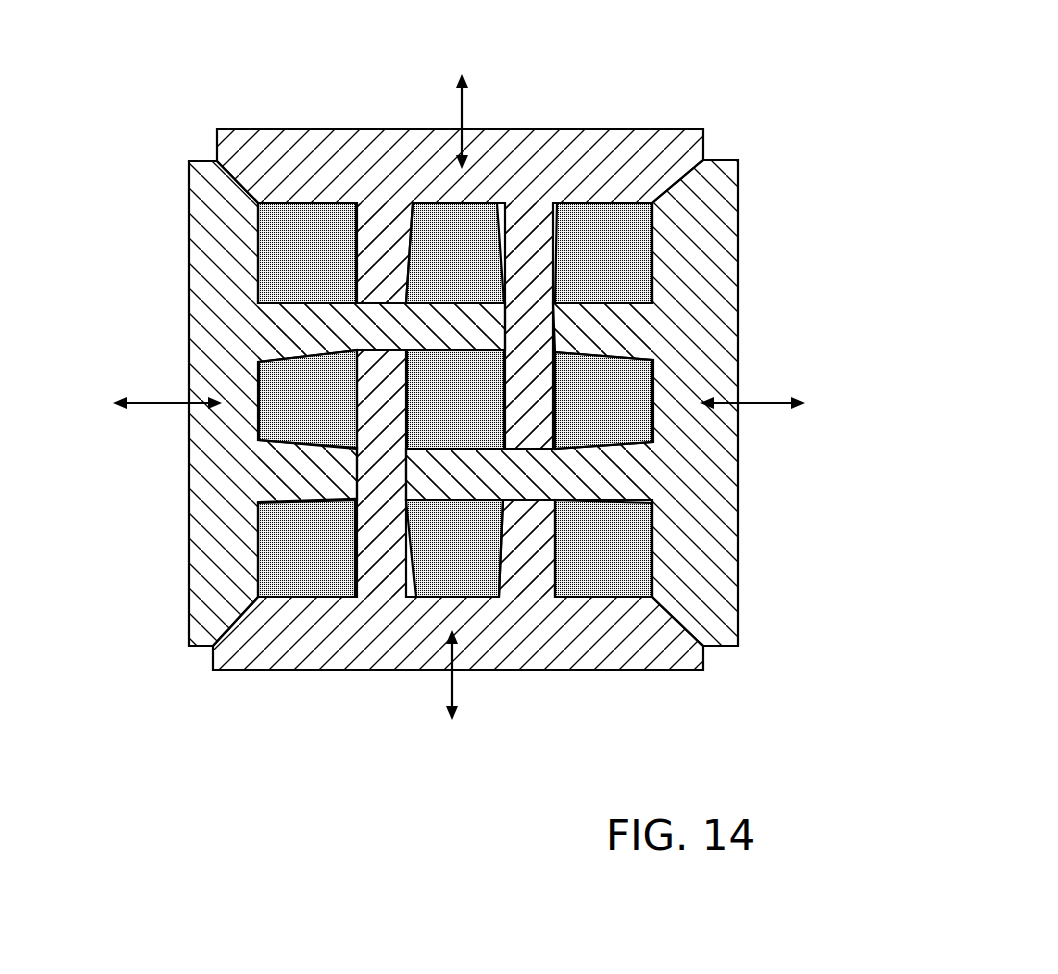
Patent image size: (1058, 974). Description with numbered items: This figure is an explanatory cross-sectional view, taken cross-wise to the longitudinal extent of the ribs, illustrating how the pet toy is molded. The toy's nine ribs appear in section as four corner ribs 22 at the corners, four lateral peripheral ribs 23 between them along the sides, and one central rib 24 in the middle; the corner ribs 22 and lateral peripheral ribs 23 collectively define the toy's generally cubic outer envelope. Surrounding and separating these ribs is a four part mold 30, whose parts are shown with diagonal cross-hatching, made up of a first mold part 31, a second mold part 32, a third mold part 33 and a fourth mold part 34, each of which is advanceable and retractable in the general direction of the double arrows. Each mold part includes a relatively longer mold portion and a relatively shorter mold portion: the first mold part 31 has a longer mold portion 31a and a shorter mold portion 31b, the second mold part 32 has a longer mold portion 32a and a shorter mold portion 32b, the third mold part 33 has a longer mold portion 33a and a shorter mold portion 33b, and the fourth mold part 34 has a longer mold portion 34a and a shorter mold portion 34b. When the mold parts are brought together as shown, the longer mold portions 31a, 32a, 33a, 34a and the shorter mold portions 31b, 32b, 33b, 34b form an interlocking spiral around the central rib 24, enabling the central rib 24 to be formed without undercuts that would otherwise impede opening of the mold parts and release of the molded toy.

The corner ribs 22 is at (307, 253).
The lateral peripheral ribs 23 is at (468, 232).
The central rib 24 is at (455, 370).
The four part mold 30 is at (171, 719).
The first mold part 31 is at (281, 354).
The longer mold portion of first mold part 31a is at (388, 330).
The shorter mold portion of first mold part 31b is at (350, 464).
The second mold part 32 is at (564, 286).
The longer mold portion of second mold part 32a is at (530, 410).
The shorter mold portion of second mold part 32b is at (380, 272).
The third mold part 33 is at (628, 447).
The longer mold portion of third mold part 33a is at (500, 475).
The shorter mold portion of third mold part 33b is at (613, 341).
The fourth mold part 34 is at (369, 558).
The longer mold portion of fourth mold part 34a is at (385, 417).
The shorter mold portion of fourth mold part 34b is at (527, 542).